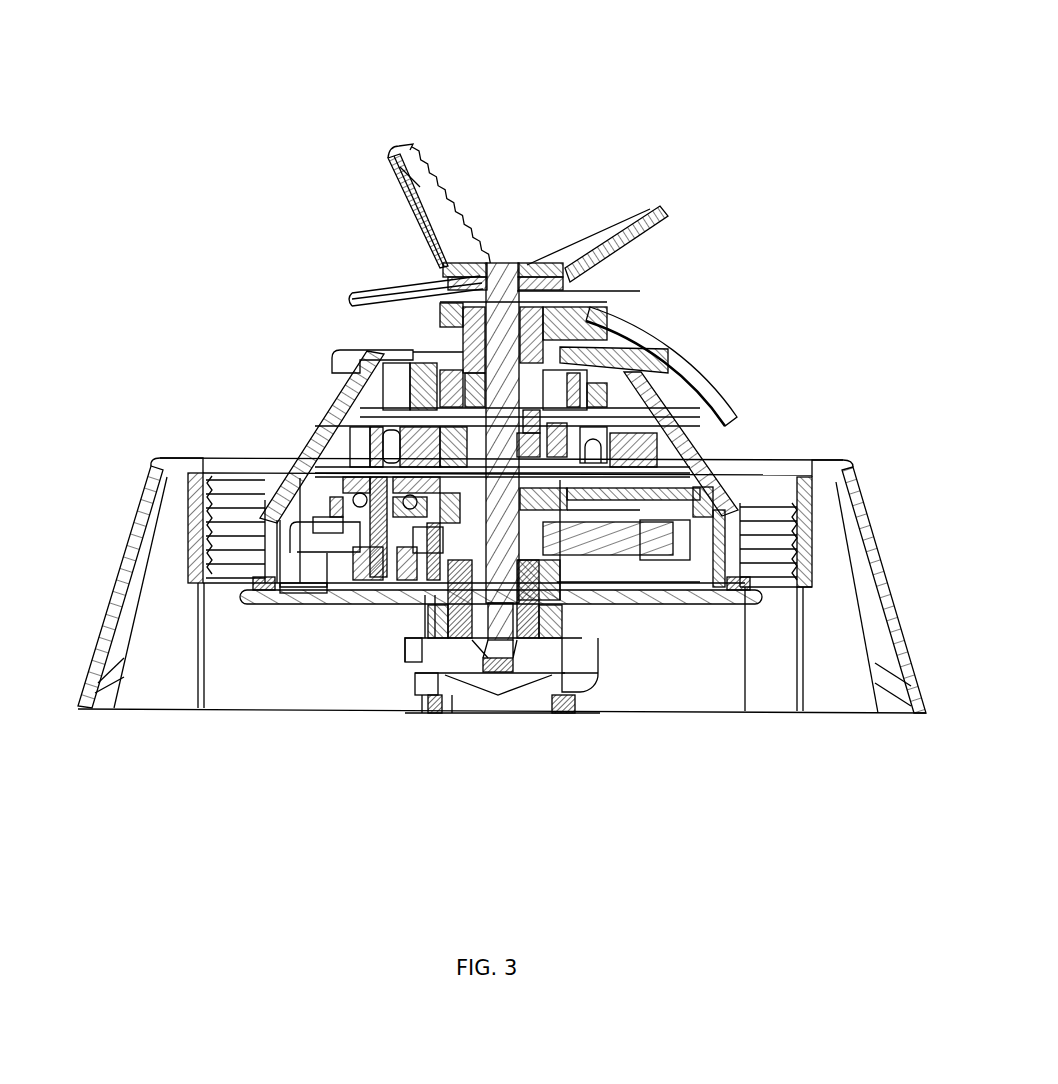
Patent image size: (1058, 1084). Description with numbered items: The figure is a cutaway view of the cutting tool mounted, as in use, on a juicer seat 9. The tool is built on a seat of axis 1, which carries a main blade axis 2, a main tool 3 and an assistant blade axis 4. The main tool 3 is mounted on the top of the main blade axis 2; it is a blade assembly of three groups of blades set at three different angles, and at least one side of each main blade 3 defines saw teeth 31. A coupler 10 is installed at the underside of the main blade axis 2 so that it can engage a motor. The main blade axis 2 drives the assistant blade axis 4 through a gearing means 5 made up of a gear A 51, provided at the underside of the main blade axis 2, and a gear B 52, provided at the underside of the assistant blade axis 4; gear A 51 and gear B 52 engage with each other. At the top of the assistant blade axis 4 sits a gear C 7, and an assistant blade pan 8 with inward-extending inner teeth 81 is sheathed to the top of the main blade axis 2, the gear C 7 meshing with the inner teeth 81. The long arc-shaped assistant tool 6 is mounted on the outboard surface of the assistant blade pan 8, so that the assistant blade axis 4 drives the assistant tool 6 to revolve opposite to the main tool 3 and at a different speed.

The seat of axis 1 is at (316, 600).
The main blade axis 2 is at (521, 267).
The main tool 3 is at (392, 172).
The saw teeth 31 is at (452, 265).
The assistant blade axis 4 is at (303, 462).
The gearing means 5 is at (437, 605).
The gear A 51 is at (593, 670).
The gear B 52 is at (412, 578).
The assistant tool 6 is at (640, 332).
The gear C 7 is at (337, 420).
The assistant blade pan 8 is at (378, 352).
The inner teeth 81 is at (640, 418).
The juicer seat 9 is at (843, 462).
The coupler 10 is at (462, 663).